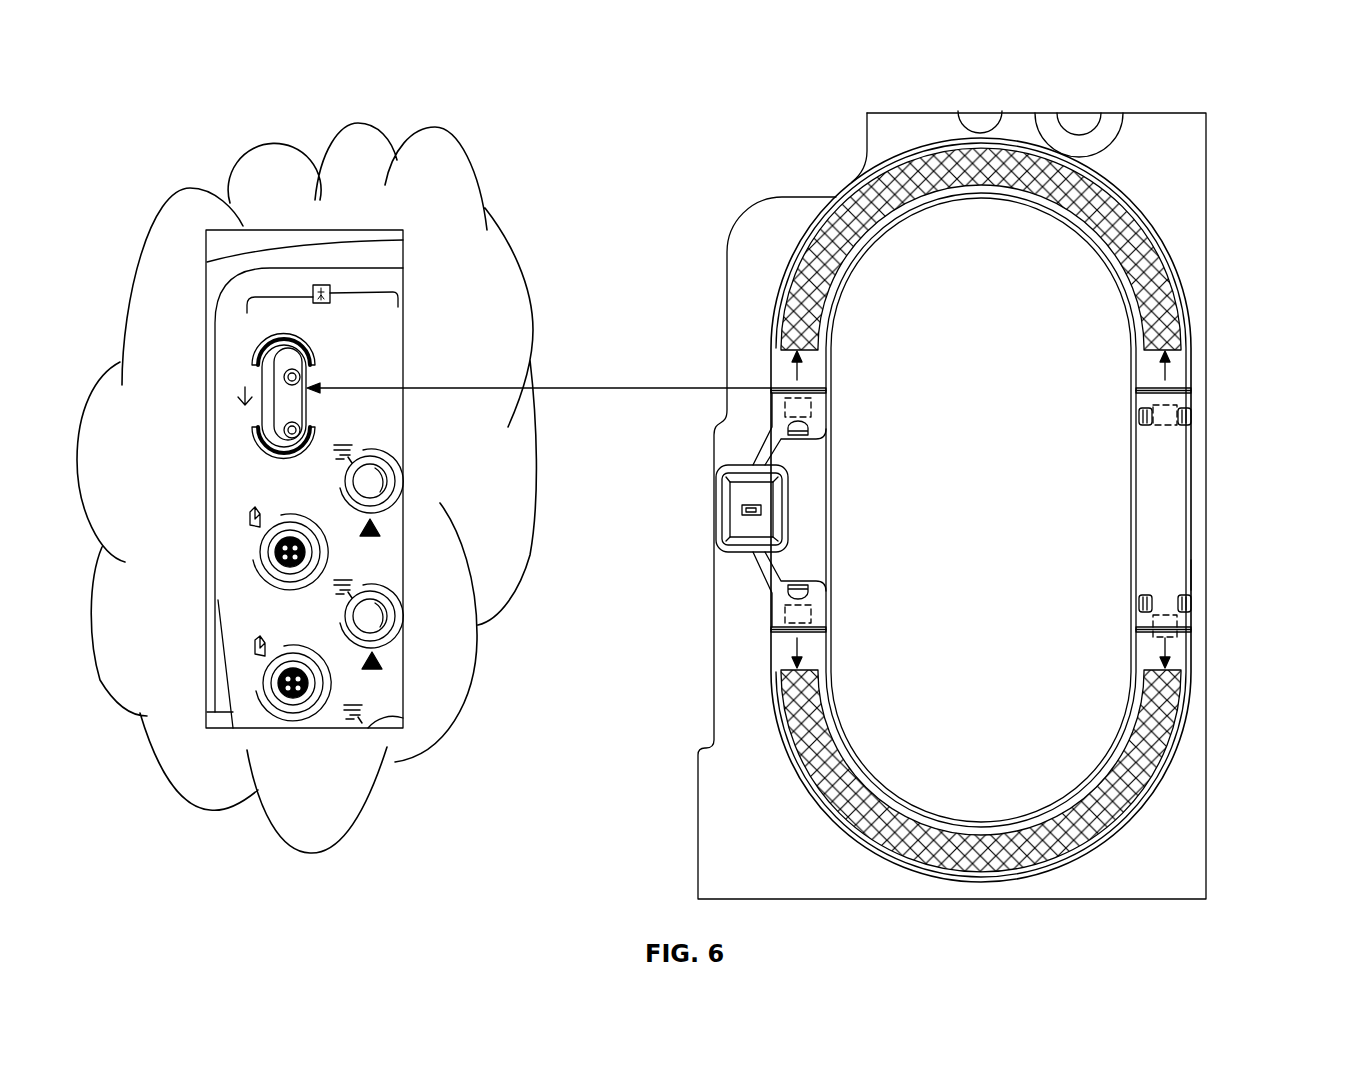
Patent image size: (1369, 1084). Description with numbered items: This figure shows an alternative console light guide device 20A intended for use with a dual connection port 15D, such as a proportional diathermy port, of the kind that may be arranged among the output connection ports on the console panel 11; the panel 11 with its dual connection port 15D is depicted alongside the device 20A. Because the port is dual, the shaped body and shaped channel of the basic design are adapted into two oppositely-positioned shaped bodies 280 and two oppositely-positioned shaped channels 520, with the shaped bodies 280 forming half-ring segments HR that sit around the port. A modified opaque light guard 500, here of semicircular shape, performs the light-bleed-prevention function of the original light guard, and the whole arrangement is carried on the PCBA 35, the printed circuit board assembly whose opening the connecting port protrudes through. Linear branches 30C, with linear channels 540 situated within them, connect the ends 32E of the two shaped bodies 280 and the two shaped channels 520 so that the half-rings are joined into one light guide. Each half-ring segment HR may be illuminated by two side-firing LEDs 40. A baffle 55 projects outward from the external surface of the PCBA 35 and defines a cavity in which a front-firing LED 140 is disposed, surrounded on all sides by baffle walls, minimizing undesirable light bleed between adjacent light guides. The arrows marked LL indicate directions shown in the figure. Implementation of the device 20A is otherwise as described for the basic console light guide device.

The console panel 11 is at (424, 488).
The dual connection port 15D is at (313, 398).
The alternative console light guide device 20A is at (979, 472).
The PCBA 35 is at (1163, 140).
The shaped bodies 280 is at (1050, 510).
The modified opaque light guard 500 is at (1173, 263).
The shaped channels 520 is at (1185, 330).
The ends 32E is at (1193, 389).
The side-firing LEDs 40 is at (784, 400).
The linear branches 30C is at (1168, 478).
The linear channels 540 is at (1200, 578).
The baffle 55 is at (731, 510).
The front-firing LED 140 is at (742, 511).
The low-level flow direction LL is at (788, 369).
The half-ring segments HR is at (1043, 246).